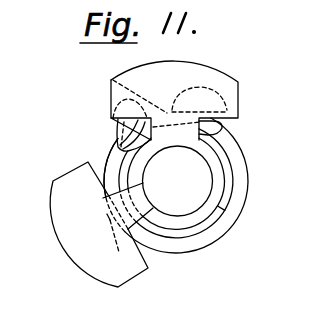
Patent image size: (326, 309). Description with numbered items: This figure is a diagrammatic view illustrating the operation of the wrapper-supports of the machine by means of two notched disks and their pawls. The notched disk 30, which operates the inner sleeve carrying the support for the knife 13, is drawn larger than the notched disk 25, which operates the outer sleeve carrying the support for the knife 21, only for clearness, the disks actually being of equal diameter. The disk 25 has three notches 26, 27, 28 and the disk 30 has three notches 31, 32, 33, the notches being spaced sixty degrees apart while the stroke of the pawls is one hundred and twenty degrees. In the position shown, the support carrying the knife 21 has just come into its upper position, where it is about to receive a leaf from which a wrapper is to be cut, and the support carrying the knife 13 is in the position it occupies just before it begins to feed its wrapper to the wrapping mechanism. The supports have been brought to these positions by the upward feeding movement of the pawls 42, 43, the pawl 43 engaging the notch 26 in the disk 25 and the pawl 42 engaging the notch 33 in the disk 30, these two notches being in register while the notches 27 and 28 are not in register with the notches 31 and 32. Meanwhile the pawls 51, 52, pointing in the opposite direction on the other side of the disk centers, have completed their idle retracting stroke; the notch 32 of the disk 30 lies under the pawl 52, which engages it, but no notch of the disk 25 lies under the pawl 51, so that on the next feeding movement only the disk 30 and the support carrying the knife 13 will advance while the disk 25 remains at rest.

The knife 13 is at (101, 224).
The knife 21 is at (174, 100).
The notched disk 25 is at (178, 237).
The notch 26 is at (167, 113).
The notch 27 is at (226, 154).
The notch 28 is at (223, 209).
The notched disk 30 is at (246, 181).
The notch 31 is at (107, 214).
The notch 32 is at (116, 148).
The notch 33 is at (114, 80).
The pawl 42 is at (212, 101).
The pawl 43 is at (222, 125).
The pawl 51 is at (123, 125).
The pawl 52 is at (113, 133).